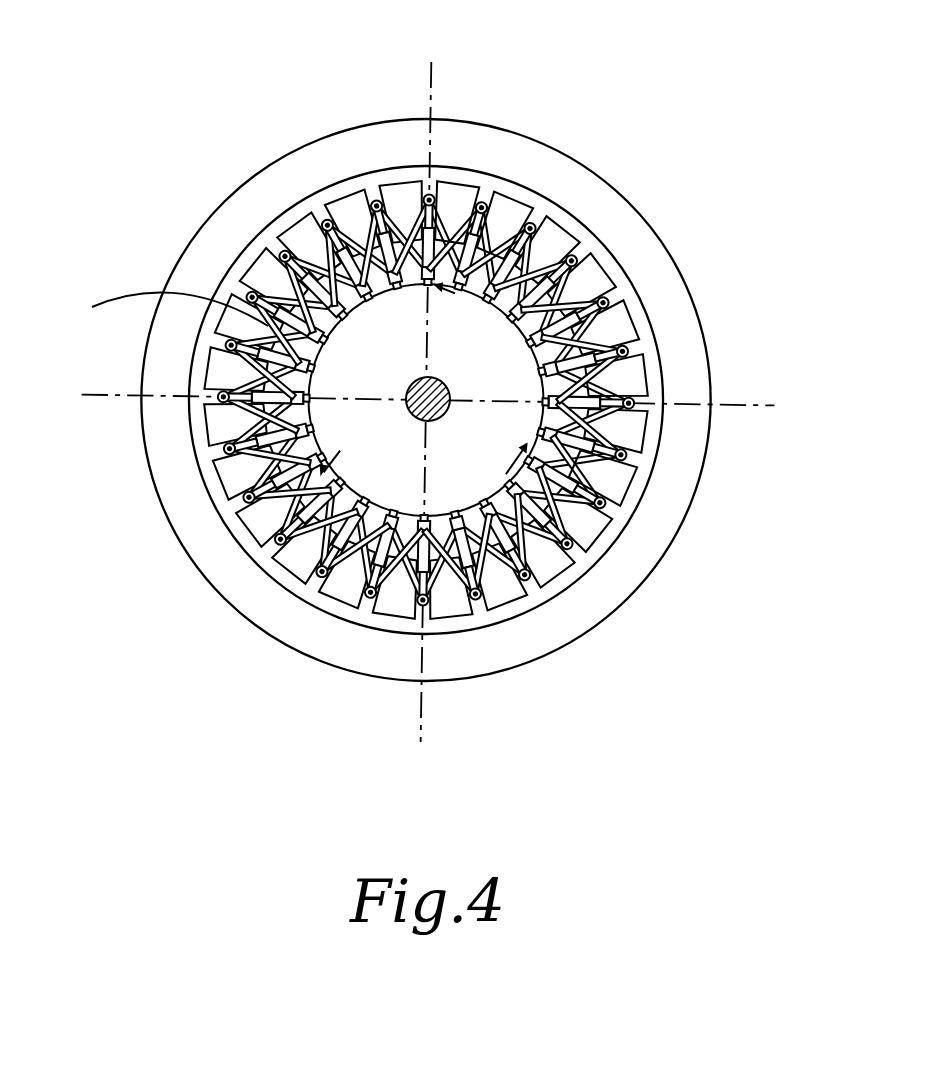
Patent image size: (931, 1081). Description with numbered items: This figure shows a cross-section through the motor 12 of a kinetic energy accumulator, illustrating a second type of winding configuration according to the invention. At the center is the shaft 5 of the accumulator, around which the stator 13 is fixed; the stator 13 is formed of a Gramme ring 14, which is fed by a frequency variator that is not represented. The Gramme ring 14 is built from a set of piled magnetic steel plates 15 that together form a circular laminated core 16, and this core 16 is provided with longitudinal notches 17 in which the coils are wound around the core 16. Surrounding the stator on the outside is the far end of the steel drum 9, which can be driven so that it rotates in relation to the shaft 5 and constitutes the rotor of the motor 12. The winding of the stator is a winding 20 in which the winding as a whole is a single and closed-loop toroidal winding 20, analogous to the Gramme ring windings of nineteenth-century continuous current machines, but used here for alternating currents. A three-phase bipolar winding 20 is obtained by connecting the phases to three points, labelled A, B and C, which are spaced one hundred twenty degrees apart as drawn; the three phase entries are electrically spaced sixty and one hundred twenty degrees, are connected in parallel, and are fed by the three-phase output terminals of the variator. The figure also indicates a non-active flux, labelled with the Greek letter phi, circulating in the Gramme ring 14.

The motor 12 is at (182, 80).
The steel drum 9 is at (318, 177).
The Gramme ring 14 is at (466, 180).
The magnetic steel plates 15 is at (514, 216).
The toroidal winding 20 is at (603, 343).
The laminated core 16 is at (623, 372).
The stator 13 is at (632, 489).
The shaft 5 is at (447, 418).
The longitudinal notches 17 is at (537, 592).